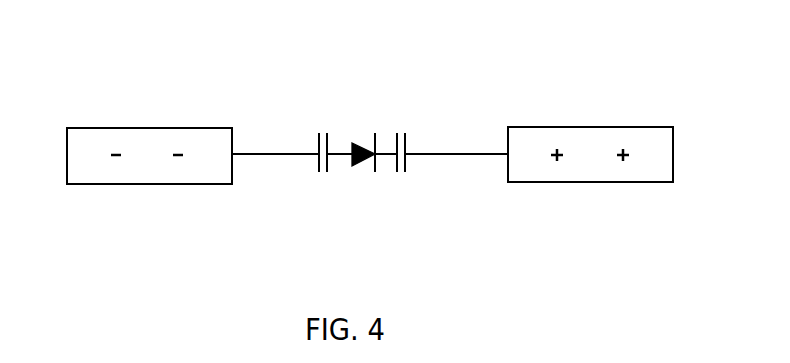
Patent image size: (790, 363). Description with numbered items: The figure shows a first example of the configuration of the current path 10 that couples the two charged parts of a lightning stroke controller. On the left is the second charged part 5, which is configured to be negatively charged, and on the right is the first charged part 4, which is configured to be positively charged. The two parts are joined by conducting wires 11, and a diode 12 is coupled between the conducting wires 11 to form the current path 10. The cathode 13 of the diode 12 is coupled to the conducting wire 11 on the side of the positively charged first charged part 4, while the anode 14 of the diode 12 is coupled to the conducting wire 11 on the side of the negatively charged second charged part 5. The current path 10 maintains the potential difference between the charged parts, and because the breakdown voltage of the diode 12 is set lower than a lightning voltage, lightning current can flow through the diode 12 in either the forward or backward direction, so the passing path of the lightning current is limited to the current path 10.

The first charged part 4 is at (592, 182).
The second charged part 5 is at (142, 185).
The current path 10 is at (425, 52).
The conducting wire 11 is at (278, 152).
The diode 12 is at (374, 126).
The cathode 13 is at (383, 157).
The anode 14 is at (345, 157).